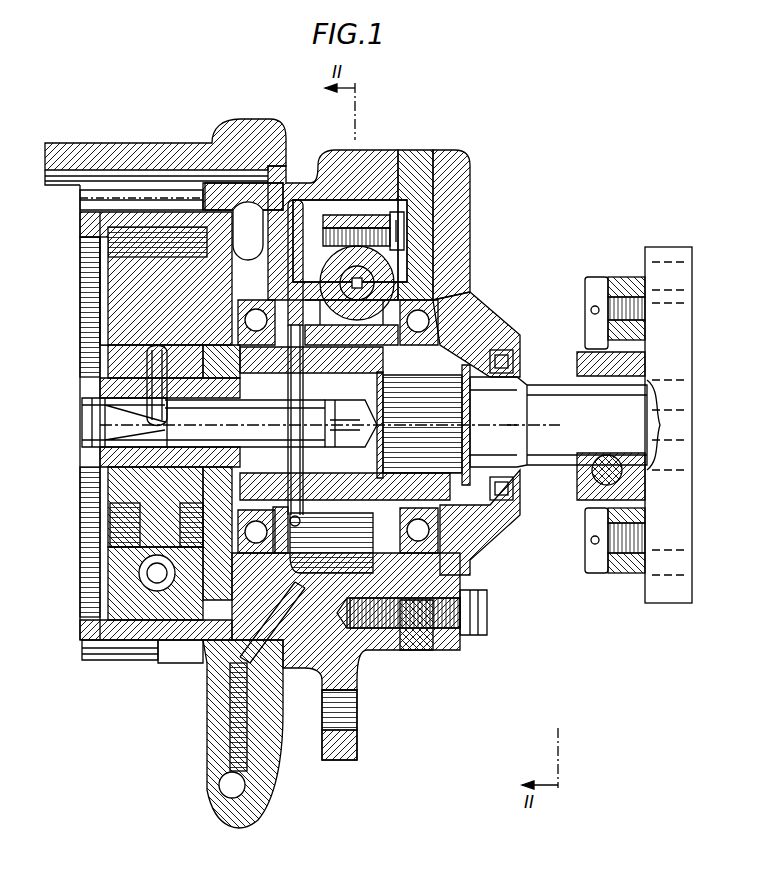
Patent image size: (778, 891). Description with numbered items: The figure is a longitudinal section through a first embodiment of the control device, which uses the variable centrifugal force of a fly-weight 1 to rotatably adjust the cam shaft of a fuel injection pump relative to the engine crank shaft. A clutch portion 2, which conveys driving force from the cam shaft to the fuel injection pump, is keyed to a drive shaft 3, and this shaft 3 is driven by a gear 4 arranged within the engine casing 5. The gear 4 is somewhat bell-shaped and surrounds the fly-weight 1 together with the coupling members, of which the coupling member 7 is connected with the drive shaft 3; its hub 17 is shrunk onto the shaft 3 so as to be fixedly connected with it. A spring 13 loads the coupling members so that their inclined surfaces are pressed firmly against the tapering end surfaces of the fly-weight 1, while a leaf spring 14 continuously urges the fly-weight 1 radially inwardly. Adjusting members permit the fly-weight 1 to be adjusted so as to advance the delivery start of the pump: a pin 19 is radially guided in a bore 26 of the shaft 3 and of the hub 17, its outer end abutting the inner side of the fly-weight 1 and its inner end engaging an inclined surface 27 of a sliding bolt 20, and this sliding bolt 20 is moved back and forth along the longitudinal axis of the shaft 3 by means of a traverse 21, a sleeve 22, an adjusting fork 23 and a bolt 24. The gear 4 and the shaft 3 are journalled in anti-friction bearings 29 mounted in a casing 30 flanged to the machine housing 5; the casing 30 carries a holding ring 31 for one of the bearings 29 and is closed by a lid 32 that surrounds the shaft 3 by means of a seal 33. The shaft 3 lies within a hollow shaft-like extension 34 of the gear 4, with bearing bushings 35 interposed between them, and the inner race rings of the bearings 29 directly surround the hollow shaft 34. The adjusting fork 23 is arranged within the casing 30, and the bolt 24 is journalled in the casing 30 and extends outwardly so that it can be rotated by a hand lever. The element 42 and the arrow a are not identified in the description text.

The fly-weight 1 is at (100, 290).
The clutch portion 2 is at (598, 356).
The drive shaft 3 is at (546, 392).
The gear 4 is at (108, 650).
The engine casing 5 is at (122, 152).
The coupling member 7 is at (100, 592).
The spring 13 is at (110, 560).
The leaf spring 14 is at (88, 266).
The hub 17 is at (100, 484).
The pin 19 is at (146, 362).
The sliding bolt 20 is at (84, 400).
The traverse 21 is at (258, 448).
The sleeve 22 is at (348, 370).
The adjusting fork 23 is at (300, 280).
The bolt 24 is at (400, 272).
The bore 26 is at (150, 345).
The inclined surface 27 is at (138, 410).
The anti-friction bearings 29 is at (240, 302).
The casing 30 is at (366, 154).
The holding ring 31 is at (416, 150).
The lid 32 is at (460, 183).
The seal 33 is at (514, 490).
The hollow shaft-like extension 34 is at (484, 300).
The bearing bushings 35 is at (222, 492).
The sleeve 42 is at (334, 515).
The direction arrow a is at (80, 420).